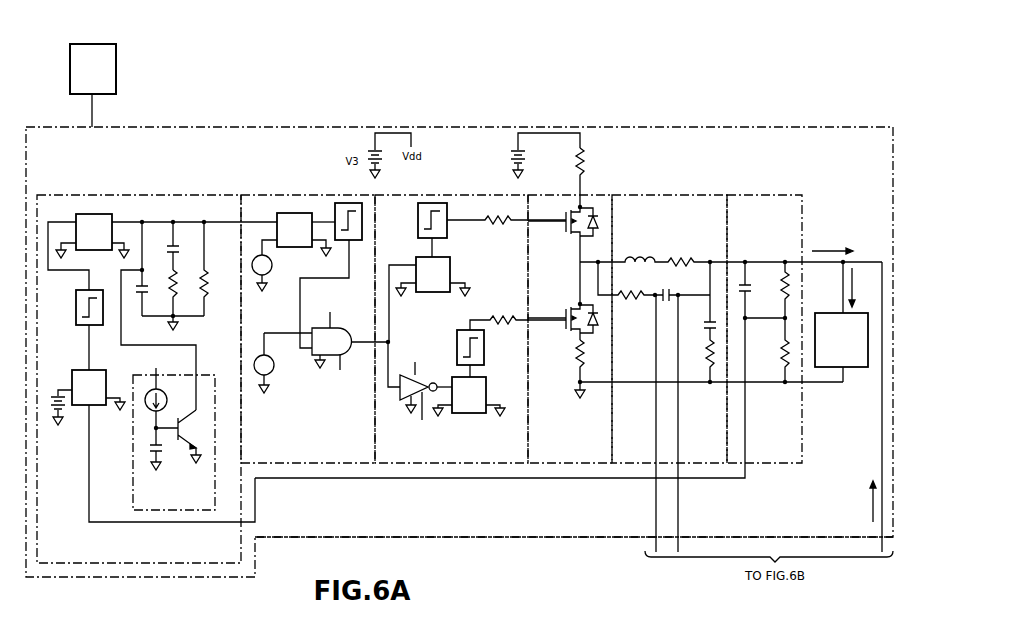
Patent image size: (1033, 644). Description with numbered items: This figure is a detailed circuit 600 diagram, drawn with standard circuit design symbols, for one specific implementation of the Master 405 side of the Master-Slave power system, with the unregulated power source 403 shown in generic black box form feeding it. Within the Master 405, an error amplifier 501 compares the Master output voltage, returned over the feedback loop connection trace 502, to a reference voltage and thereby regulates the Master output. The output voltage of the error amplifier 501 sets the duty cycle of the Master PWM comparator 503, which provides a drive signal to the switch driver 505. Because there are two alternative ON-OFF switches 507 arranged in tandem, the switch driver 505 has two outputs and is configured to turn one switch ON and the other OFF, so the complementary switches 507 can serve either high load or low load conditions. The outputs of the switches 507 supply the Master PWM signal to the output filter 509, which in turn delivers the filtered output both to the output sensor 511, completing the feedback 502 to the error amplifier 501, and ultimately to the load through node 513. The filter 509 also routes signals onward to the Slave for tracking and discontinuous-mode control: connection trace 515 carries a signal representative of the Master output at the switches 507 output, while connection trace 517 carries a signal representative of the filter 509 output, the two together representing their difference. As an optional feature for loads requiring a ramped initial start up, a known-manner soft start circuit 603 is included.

The unregulated power source 403 is at (93, 85).
The circuit 600 is at (826, 106).
The error amplifier 501 is at (145, 195).
The PWM comparator 503 is at (312, 195).
The switch driver 505 is at (450, 195).
The complementary switches 507 is at (567, 478).
The output filter 509 is at (665, 195).
The output sensor 511 is at (762, 195).
The node 513 is at (873, 260).
The feedback loop connection trace 502 is at (407, 478).
The connection trace 515 is at (656, 509).
The connection trace 517 is at (678, 509).
The Master 405 is at (487, 537).
The soft start circuit 603 is at (133, 482).